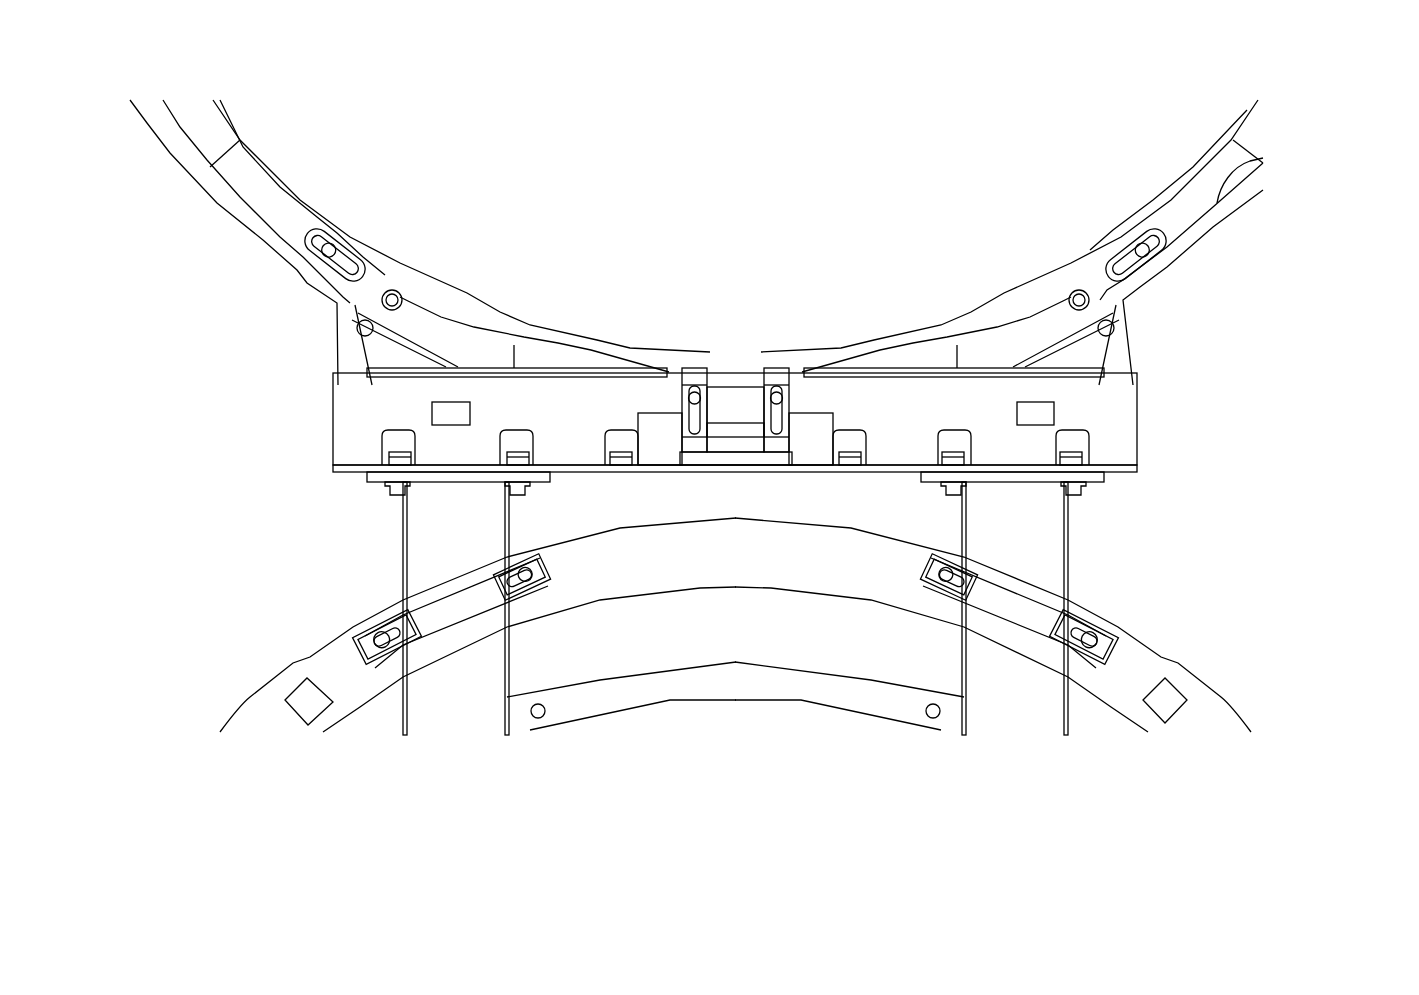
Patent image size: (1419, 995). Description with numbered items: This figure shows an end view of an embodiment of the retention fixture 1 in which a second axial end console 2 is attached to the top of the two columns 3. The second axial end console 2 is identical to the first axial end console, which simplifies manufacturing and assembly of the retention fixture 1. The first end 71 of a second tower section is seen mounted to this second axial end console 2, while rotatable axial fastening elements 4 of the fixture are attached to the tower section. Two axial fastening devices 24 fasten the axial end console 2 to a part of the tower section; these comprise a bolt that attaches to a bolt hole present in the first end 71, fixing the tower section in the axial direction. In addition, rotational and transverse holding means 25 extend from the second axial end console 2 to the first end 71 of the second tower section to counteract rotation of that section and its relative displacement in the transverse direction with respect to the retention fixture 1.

The retention fixture 1 is at (1286, 352).
The axial end console 2 is at (358, 423).
The columns 3 is at (1038, 572).
The rotatable axial fastening elements 4 is at (447, 615).
The axial fastening devices 24 is at (772, 367).
The rotational and transverse holding means 25 is at (1110, 305).
The first end 71 is at (1263, 158).